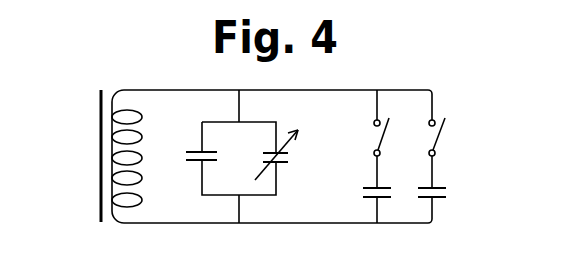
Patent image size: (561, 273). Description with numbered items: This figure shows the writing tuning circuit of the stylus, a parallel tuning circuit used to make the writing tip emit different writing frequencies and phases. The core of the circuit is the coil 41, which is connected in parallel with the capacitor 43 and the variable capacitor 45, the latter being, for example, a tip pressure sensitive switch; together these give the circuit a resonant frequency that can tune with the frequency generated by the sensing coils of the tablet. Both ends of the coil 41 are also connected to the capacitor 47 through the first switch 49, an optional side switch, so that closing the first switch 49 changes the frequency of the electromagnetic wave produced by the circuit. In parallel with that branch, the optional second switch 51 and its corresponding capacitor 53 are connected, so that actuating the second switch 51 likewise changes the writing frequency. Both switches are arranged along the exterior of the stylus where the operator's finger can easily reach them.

The coil 41 is at (97, 160).
The capacitor 43 is at (200, 150).
The variable capacitor 45 is at (283, 165).
The capacitor 47 is at (372, 186).
The first switch 49 is at (379, 142).
The second switch 51 is at (438, 137).
The capacitor 53 is at (438, 186).